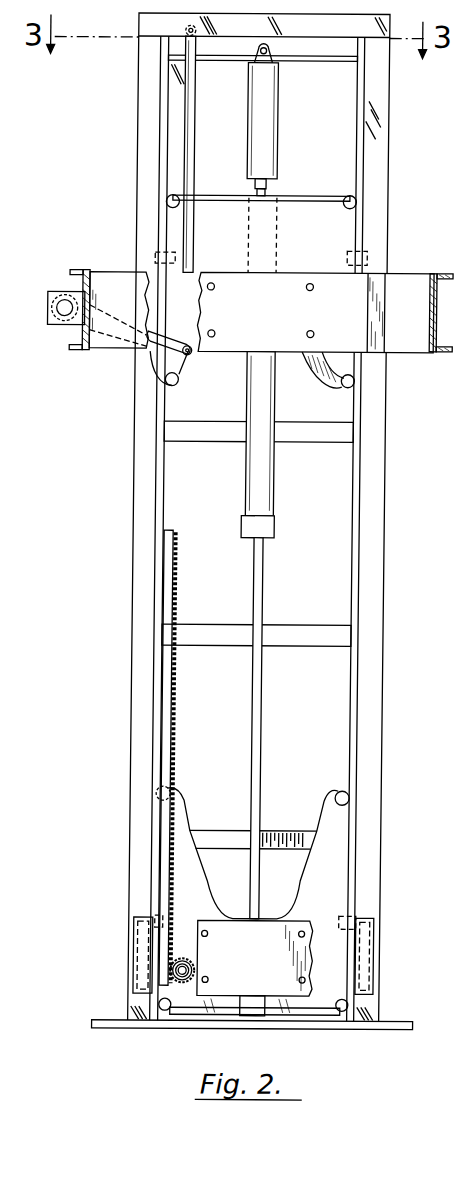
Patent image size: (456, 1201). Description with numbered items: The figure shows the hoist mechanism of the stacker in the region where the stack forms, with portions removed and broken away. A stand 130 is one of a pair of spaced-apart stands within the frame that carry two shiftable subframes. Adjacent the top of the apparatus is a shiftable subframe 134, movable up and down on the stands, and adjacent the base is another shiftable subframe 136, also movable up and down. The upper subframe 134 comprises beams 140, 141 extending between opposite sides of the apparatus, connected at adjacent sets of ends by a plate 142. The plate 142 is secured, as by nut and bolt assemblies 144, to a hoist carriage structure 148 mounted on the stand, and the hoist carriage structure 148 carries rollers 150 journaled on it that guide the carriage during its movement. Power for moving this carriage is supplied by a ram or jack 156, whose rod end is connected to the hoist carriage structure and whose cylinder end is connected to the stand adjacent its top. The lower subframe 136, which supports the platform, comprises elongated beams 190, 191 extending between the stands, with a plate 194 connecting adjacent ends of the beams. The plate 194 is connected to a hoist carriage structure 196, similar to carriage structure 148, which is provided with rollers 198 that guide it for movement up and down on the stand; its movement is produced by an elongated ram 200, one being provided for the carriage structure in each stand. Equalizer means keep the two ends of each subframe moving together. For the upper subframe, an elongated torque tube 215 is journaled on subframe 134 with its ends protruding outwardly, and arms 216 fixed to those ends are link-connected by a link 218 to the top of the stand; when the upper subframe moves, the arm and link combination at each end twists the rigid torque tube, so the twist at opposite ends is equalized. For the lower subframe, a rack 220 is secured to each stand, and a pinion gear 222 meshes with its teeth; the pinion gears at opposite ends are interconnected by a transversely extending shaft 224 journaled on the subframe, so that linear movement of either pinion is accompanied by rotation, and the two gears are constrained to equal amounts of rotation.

The stand 130 is at (398, 209).
The shiftable subframe 134 is at (402, 341).
The shiftable subframe 136 is at (291, 989).
The beam 140 is at (93, 285).
The beam 141 is at (434, 321).
The plate 142 is at (363, 322).
The nut and bolt assemblies 144 is at (215, 290).
The hoist carriage structure 148 is at (312, 199).
The rollers 150 is at (349, 208).
The ram or jack 156 is at (270, 108).
The beam 190 is at (144, 958).
The beam 191 is at (384, 953).
The plate 194 is at (282, 981).
The hoist carriage structure 196 is at (191, 838).
The rollers 198 is at (346, 790).
The ram 200 is at (270, 502).
The torque tube 215 is at (61, 299).
The arms 216 is at (153, 351).
The link 218 is at (191, 172).
The rack 220 is at (171, 716).
The pinion gear 222 is at (195, 957).
The shaft 224 is at (205, 968).